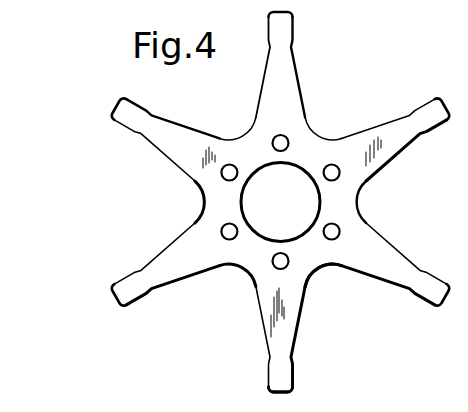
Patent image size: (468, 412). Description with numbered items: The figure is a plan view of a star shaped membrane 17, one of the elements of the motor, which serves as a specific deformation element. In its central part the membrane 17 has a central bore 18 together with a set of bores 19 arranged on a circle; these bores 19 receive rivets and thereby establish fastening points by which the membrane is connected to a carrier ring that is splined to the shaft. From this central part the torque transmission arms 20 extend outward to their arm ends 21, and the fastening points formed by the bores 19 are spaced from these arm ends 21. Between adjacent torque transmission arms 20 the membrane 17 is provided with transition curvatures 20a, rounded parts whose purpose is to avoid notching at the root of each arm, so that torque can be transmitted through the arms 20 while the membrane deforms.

The membrane 17 is at (147, 202).
The central bore 18 is at (250, 232).
The bores 19 is at (277, 263).
The torque transmission arms 20 is at (284, 322).
The transition curvatures 20a is at (320, 265).
The arm ends 21 is at (292, 383).